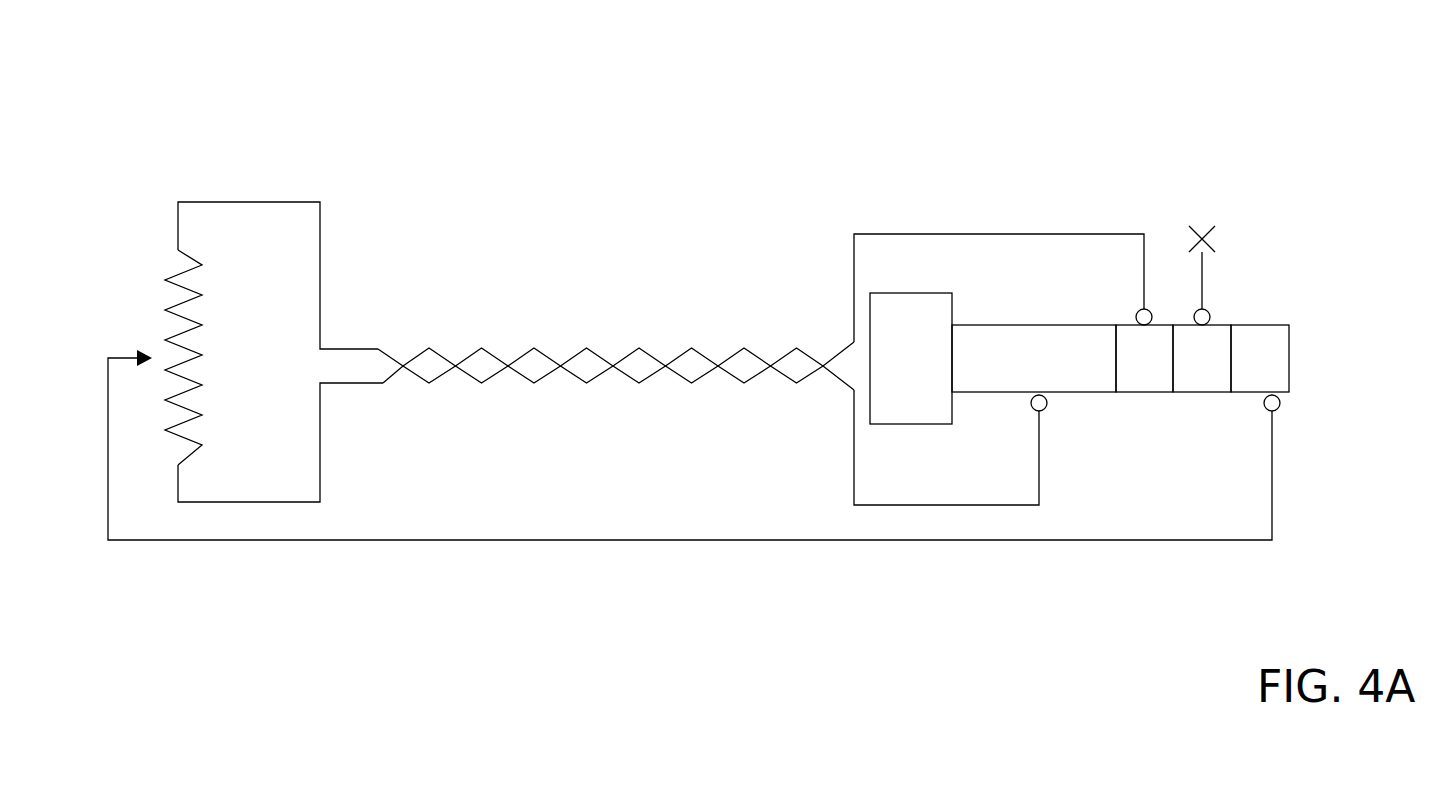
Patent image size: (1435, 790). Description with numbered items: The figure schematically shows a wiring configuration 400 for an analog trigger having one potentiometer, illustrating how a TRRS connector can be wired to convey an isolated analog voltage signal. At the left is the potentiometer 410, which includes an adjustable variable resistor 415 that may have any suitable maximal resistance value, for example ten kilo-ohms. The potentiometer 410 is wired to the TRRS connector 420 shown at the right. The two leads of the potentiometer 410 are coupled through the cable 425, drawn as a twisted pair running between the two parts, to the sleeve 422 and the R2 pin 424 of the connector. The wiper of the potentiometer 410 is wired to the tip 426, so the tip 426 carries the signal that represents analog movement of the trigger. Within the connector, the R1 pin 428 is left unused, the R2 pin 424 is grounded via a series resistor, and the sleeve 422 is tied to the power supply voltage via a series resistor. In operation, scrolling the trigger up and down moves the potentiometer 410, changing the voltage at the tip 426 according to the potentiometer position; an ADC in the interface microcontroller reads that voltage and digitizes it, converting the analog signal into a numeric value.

The wiring configuration 400 is at (171, 88).
The potentiometer 410 is at (306, 176).
The adjustable variable resistor 415 is at (133, 268).
The TRRS connector 420 is at (1121, 348).
The sleeve 422 is at (1013, 375).
The R2 pin 424 is at (1125, 375).
The cable 425 is at (604, 320).
The tip 426 is at (1240, 375).
The R1 pin 428 is at (1182, 375).